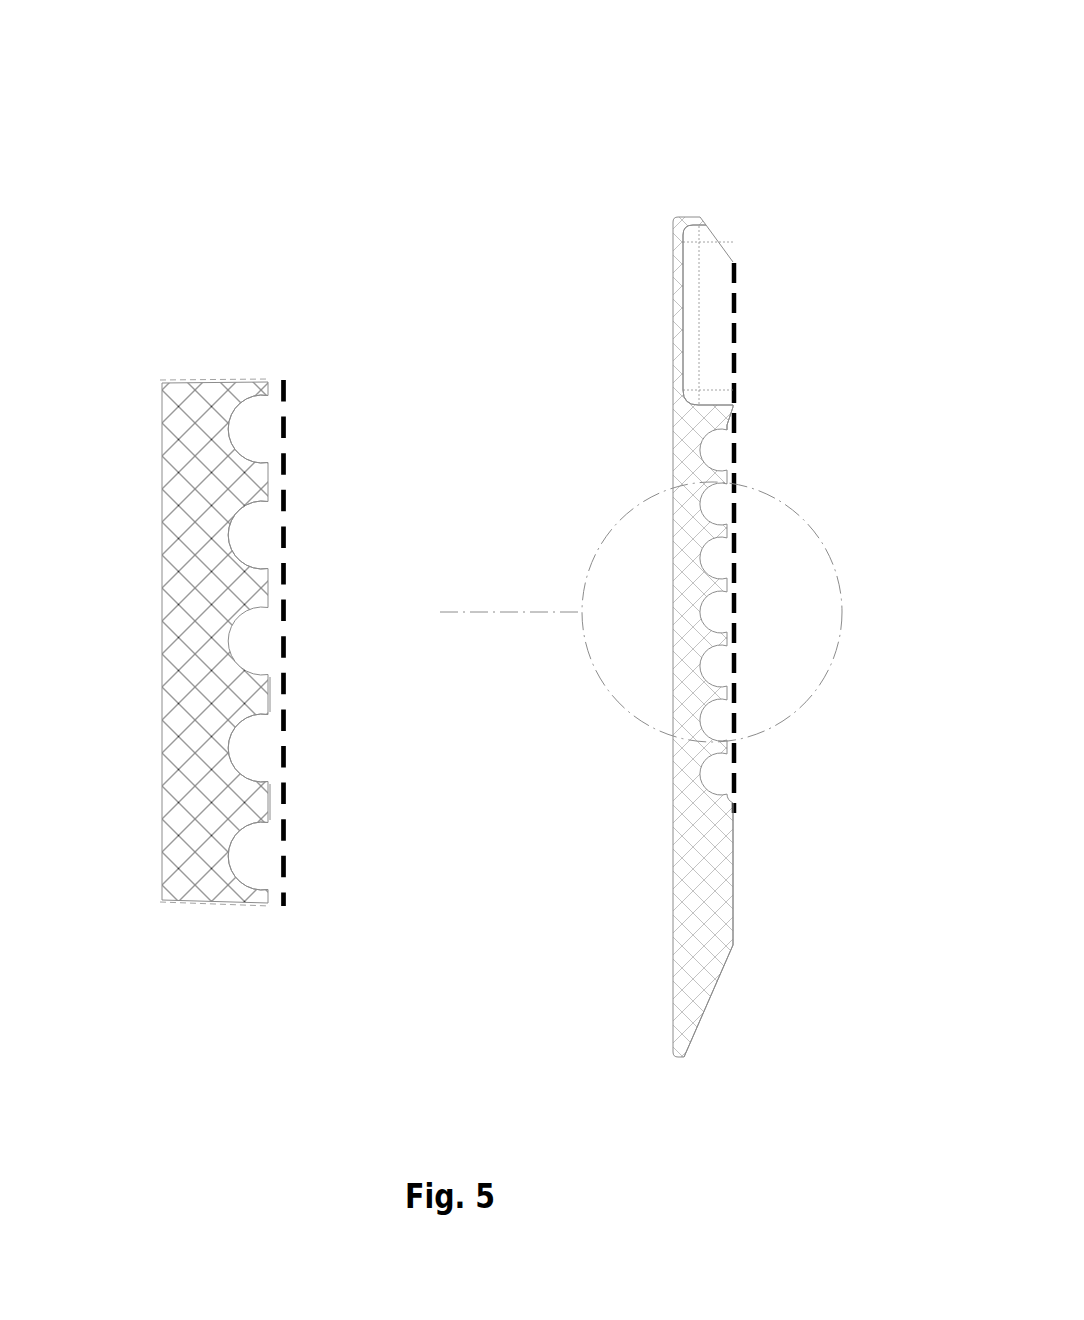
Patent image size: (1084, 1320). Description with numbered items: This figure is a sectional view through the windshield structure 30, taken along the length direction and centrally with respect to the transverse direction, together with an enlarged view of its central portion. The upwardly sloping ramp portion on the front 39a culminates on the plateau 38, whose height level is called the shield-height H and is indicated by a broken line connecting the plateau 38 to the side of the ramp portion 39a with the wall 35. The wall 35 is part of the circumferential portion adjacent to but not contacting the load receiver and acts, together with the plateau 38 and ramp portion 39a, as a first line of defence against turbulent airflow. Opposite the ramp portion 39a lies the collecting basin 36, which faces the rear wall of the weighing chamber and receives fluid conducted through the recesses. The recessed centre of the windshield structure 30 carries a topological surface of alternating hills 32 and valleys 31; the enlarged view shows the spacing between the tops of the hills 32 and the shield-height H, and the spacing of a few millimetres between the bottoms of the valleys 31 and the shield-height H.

The windshield structure 30 is at (233, 298).
The valleys 31 is at (254, 444).
The hills 32 is at (280, 709).
The wall of circumferential portion 35 is at (746, 401).
The collecting basin 36 is at (736, 223).
The plateau of circumferential portion 38 is at (748, 885).
The ramp portion on front 39a is at (726, 997).
The shield-height H is at (304, 890).